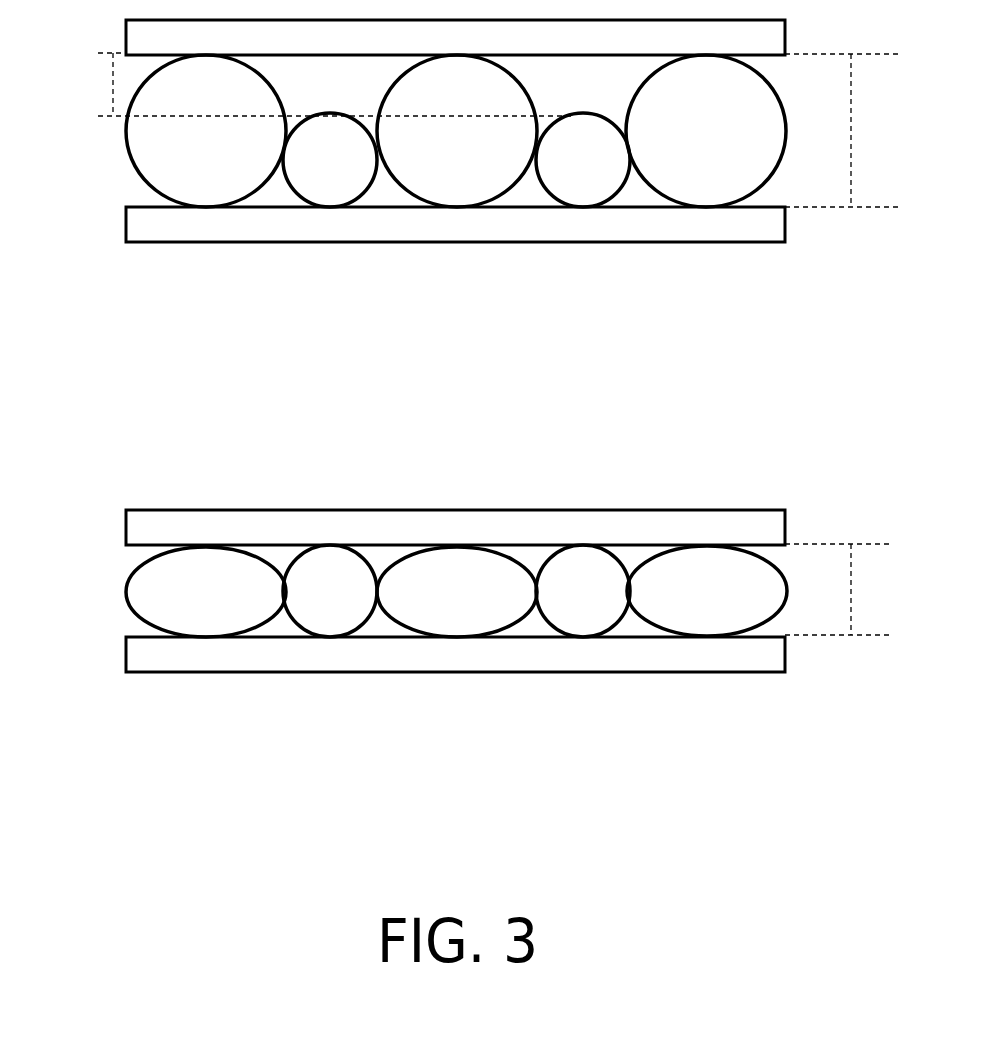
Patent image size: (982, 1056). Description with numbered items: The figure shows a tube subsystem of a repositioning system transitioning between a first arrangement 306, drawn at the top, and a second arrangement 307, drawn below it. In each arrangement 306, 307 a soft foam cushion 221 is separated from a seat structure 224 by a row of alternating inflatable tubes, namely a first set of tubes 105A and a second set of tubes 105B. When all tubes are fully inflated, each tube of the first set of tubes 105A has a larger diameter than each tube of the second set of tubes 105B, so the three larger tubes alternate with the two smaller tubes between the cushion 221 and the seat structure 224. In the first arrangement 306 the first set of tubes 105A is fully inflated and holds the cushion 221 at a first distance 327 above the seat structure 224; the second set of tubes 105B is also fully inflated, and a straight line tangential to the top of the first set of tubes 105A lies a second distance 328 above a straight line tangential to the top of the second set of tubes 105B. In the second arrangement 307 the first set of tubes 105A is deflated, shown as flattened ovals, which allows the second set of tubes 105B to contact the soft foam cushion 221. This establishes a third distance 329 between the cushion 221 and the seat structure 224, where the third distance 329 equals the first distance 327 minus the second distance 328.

The soft foam cushion 221 is at (127, 42).
The seat structure 224 is at (127, 231).
The first set of tubes 105A is at (456, 346).
The second set of tubes 105B is at (456, 375).
The first distance 327 is at (843, 130).
The second distance 328 is at (322, 84).
The third distance 329 is at (840, 589).
The first arrangement 306 is at (747, 323).
The second arrangement 307 is at (748, 779).